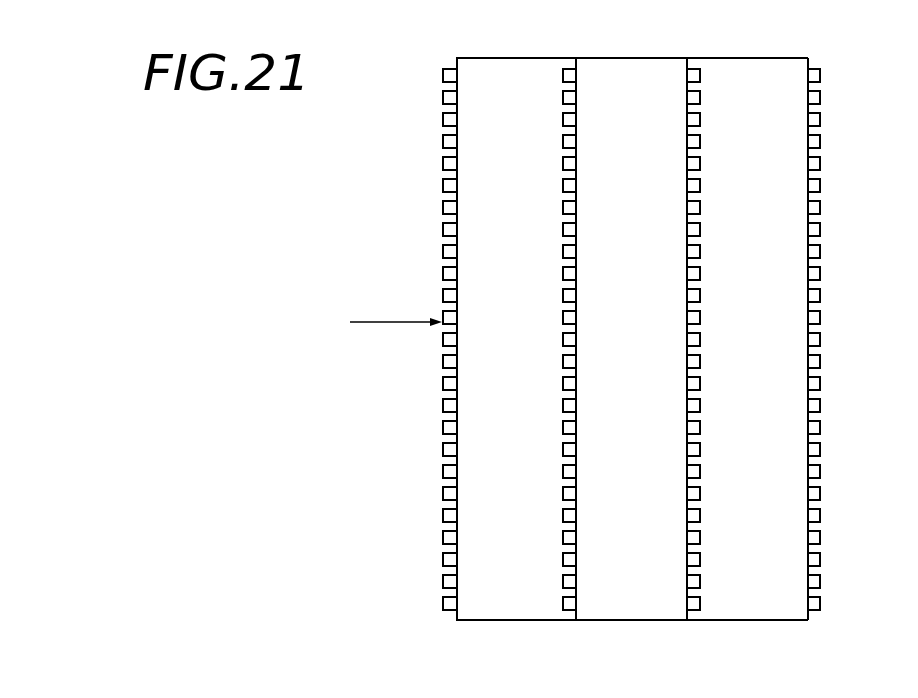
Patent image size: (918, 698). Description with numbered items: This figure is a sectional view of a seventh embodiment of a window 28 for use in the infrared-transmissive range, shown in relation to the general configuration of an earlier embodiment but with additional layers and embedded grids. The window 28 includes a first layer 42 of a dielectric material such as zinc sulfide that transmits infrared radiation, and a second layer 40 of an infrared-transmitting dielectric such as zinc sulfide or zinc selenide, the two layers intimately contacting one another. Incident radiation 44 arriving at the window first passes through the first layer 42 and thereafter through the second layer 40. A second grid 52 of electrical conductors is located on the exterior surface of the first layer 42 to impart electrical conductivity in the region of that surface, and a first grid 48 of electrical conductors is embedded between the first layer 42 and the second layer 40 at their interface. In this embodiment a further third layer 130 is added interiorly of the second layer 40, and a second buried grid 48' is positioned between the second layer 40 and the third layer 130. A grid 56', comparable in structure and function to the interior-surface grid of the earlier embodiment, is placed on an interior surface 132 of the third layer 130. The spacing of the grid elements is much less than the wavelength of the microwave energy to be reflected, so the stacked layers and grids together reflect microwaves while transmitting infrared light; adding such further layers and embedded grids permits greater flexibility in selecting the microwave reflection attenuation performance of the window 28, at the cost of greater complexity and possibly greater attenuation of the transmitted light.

The window 28 is at (428, 62).
The incident radiation 44 is at (383, 321).
The first layer 42 is at (498, 602).
The second layer 40 is at (623, 603).
The third layer 130 is at (738, 603).
The second grid 52 is at (443, 580).
The first grid 48 is at (534, 339).
The second buried grid 48' is at (726, 339).
The grid 56' is at (841, 339).
The interior surface 132 is at (806, 568).